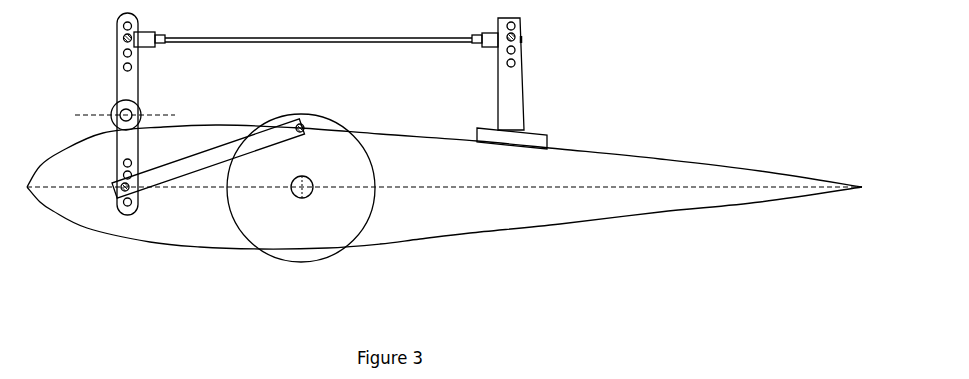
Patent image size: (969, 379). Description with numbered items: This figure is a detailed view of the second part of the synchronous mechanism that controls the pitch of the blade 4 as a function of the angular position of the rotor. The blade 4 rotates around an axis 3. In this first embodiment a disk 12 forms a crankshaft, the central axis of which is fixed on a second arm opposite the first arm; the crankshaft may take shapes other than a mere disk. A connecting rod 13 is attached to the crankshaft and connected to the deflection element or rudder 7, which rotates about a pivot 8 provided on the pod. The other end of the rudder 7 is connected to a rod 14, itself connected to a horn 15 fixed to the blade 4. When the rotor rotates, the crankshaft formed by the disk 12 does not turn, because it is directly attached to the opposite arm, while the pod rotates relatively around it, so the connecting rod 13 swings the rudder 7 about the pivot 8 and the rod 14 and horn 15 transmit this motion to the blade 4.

The axis 3 is at (305, 191).
The blade 4 is at (430, 210).
The deflection element 7 is at (120, 92).
The pivot 8 is at (120, 118).
The disk 12 is at (273, 240).
The connecting rod 13 is at (187, 169).
The rod 14 is at (285, 41).
The horn 15 is at (507, 83).